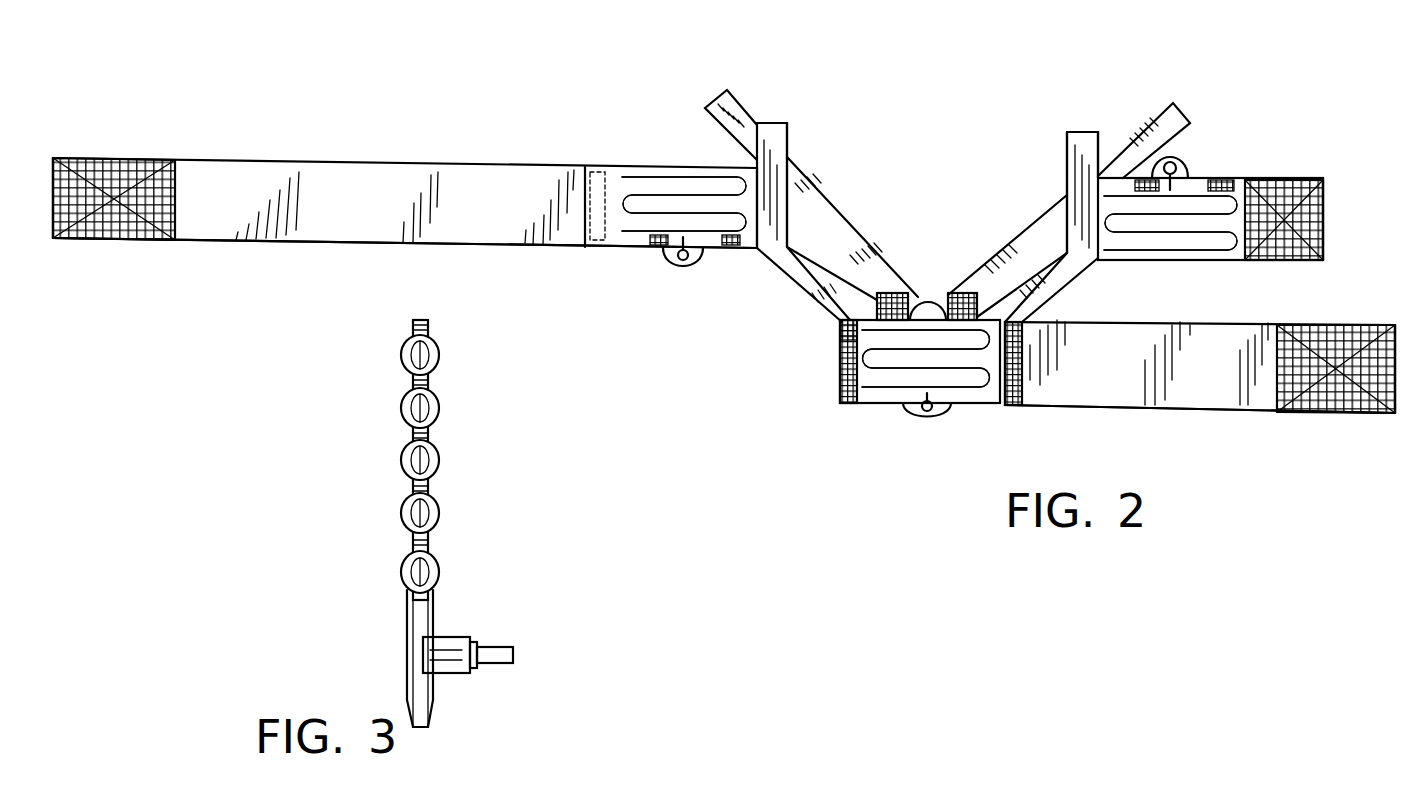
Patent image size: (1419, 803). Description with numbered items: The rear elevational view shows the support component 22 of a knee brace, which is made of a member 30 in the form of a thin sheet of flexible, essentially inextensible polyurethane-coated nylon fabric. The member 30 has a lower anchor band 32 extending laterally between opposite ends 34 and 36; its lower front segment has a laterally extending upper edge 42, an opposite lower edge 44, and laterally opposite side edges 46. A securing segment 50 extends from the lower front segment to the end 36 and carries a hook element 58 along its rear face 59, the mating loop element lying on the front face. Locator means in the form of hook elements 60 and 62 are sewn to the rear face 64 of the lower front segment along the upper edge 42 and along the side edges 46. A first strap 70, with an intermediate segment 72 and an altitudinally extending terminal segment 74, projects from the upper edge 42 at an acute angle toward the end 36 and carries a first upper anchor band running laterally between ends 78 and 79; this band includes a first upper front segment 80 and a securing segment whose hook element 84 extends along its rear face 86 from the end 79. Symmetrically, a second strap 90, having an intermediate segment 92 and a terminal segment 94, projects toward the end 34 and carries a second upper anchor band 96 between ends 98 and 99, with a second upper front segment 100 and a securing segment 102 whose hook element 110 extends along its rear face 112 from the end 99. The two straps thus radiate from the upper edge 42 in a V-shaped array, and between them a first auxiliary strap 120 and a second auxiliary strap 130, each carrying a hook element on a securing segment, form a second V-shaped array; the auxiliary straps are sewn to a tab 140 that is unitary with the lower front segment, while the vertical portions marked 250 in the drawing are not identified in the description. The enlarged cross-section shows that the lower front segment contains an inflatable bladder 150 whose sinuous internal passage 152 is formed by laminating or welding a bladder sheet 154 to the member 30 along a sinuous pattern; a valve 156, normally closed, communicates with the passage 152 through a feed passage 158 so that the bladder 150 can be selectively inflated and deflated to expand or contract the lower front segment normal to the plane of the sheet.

In FIG. 2, the support component 22 is at (936, 422).
In FIG. 2, the member 30 is at (1253, 412).
In FIG. 2, the lower anchor band 32 is at (1193, 412).
In FIG. 2, the end 34 is at (840, 348).
In FIG. 2, the end 36 is at (1396, 343).
In FIG. 2, the upper edge 42 is at (922, 298).
In FIG. 2, the lower edge 44 is at (880, 404).
In FIG. 2, the side edges 46 is at (1023, 378).
In FIG. 2, the securing segment 50 is at (1170, 393).
In FIG. 2, the hook element 58 is at (1328, 413).
In FIG. 2, the rear face 59 is at (1230, 374).
In FIG. 2, the hook element 60 is at (873, 300).
In FIG. 2, the hook elements 62 is at (838, 375).
In FIG. 2, the rear face 64 is at (940, 300).
In FIG. 2, the first strap 70 is at (1057, 280).
In FIG. 2, the intermediate segment 72 is at (1057, 320).
In FIG. 2, the terminal segment 74 is at (1067, 138).
In FIG. 2, the end 78 is at (1082, 262).
In FIG. 2, the end 79 is at (1323, 238).
In FIG. 2, the first upper front segment 80 is at (1217, 178).
In FIG. 2, the hook element 84 is at (1290, 180).
In FIG. 2, the rear face 86 is at (1323, 200).
In FIG. 2, the second strap 90 is at (772, 262).
In FIG. 2, the intermediate segment 92 is at (793, 272).
In FIG. 2, the terminal segment 94 is at (785, 135).
In FIG. 2, the second upper anchor band 96 is at (355, 248).
In FIG. 2, the end 98 is at (800, 173).
In FIG. 2, the end 99 is at (58, 212).
In FIG. 2, the second upper front segment 100 is at (663, 168).
In FIG. 2, the securing segment 102 is at (400, 163).
In FIG. 2, the hook element 110 is at (112, 165).
In FIG. 2, the rear face 112 is at (372, 206).
In FIG. 2, the first auxiliary strap 120 is at (1180, 104).
In FIG. 2, the second auxiliary strap 130 is at (730, 90).
In FIG. 2, the tab 140 is at (891, 294).
In FIG. 2, the vertical tab 250 is at (770, 126).
In FIG. 3, the bladder 150 is at (440, 410).
In FIG. 3, the sinuous internal passage 152 is at (435, 455).
In FIG. 3, the bladder sheet 154 is at (442, 540).
In FIG. 3, the valve 156 is at (478, 642).
In FIG. 3, the feed passage 158 is at (435, 617).